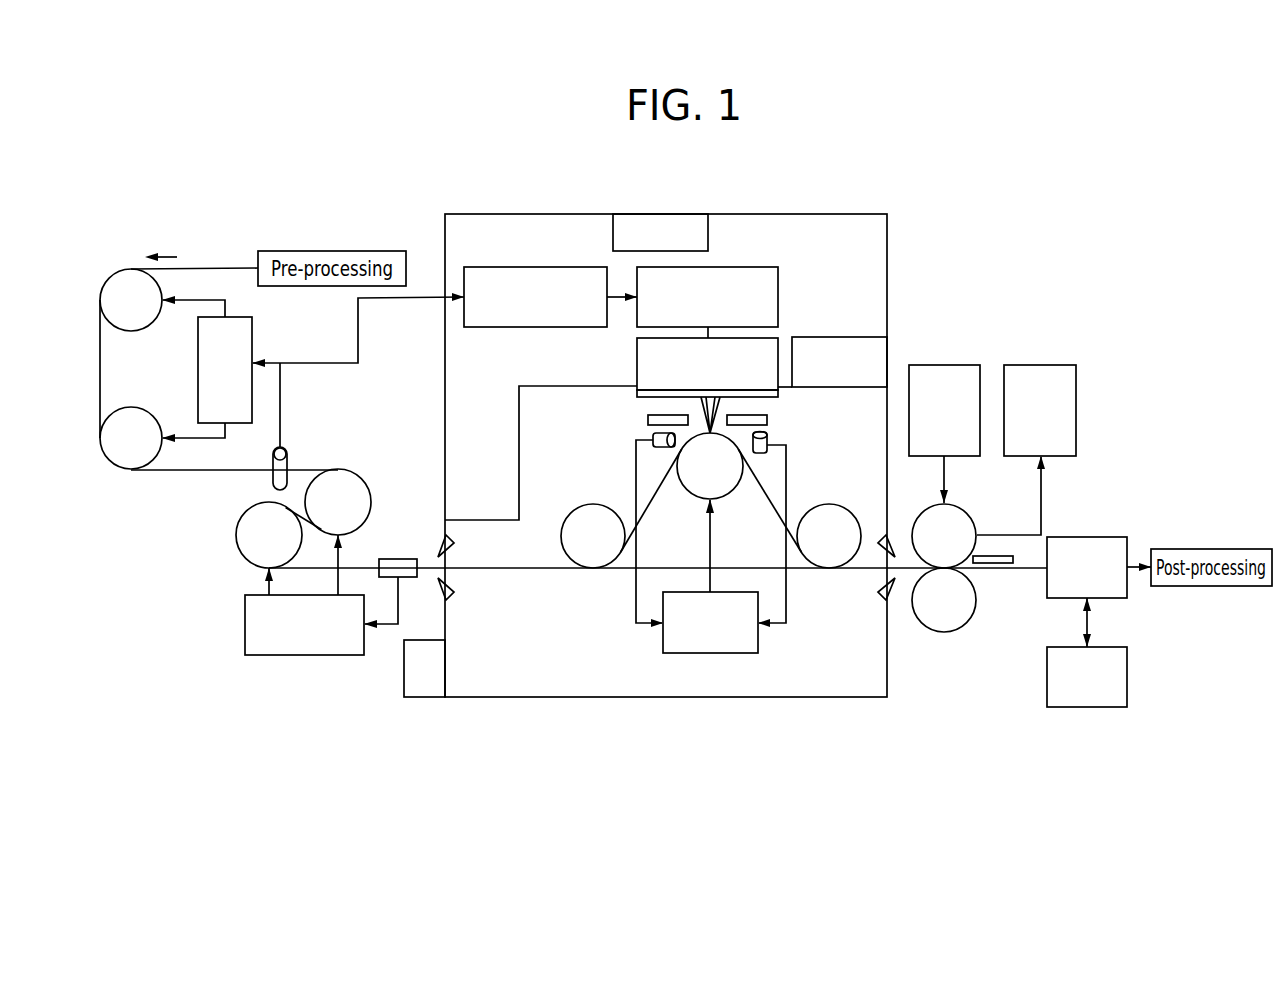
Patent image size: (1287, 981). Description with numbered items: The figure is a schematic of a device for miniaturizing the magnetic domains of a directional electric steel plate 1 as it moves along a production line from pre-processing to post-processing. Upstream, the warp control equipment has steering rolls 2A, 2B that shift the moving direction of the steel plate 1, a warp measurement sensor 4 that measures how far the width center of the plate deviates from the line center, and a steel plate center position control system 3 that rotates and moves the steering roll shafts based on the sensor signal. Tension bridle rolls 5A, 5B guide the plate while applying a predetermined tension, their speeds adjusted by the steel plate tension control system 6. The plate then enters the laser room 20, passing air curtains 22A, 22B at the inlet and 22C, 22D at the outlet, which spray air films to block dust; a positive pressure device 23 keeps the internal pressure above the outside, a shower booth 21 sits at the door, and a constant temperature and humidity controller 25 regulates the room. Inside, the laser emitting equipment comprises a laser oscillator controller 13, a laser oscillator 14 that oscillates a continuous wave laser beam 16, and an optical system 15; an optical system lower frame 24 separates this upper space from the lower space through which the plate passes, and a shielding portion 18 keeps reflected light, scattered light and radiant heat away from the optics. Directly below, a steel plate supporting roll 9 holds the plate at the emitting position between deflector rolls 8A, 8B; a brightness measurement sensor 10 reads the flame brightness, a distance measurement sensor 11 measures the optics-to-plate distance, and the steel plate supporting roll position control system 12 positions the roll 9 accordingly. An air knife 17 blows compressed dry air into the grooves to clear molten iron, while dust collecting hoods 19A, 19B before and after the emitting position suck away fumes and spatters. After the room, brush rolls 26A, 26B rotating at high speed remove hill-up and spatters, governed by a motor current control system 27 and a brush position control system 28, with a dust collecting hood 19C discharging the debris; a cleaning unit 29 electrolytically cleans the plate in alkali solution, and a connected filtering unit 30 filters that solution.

The steel plate 1 is at (216, 266).
The steering roll 2A is at (125, 285).
The steering roll 2B is at (126, 457).
The steel plate center position control system 3 is at (198, 364).
The warp measurement sensor 4 is at (288, 460).
The tension bridle roll 5A is at (352, 490).
The tension bridle roll 5B is at (246, 537).
The steel plate tension control system 6 is at (301, 656).
The deflector roll 8A is at (590, 515).
The deflector roll 8B is at (828, 515).
The steel plate supporting roll 9 is at (698, 486).
The brightness measurement sensor 10 is at (668, 446).
The distance measurement sensor 11 is at (763, 452).
The steel plate supporting roll position control system 12 is at (738, 592).
The laser oscillator controller 13 is at (538, 267).
The laser oscillator 14 is at (742, 267).
The optical system 15 is at (637, 363).
The laser beam 16 is at (683, 403).
The air knife 17 is at (740, 403).
The shielding portion 18 is at (637, 395).
The dust collecting hood 19A is at (648, 420).
The dust collecting hood 19B is at (767, 420).
The dust collecting hood 19C is at (1001, 565).
The laser room 20 is at (636, 697).
The shower booth 21 is at (422, 697).
The air curtain 22A is at (456, 544).
The air curtain 22B is at (456, 594).
The air curtain 22C is at (890, 533).
The air curtain 22D is at (888, 603).
The positive pressure device 23 is at (660, 214).
The optical system lower frame 24 is at (528, 386).
The constant temperature and humidity controller 25 is at (838, 337).
The brush roll 26A is at (960, 515).
The brush roll 26B is at (960, 620).
The motor current control system 27 is at (1041, 365).
The brush position control system 28 is at (946, 365).
The cleaning unit 29 is at (1090, 537).
The filtering unit 30 is at (1090, 707).